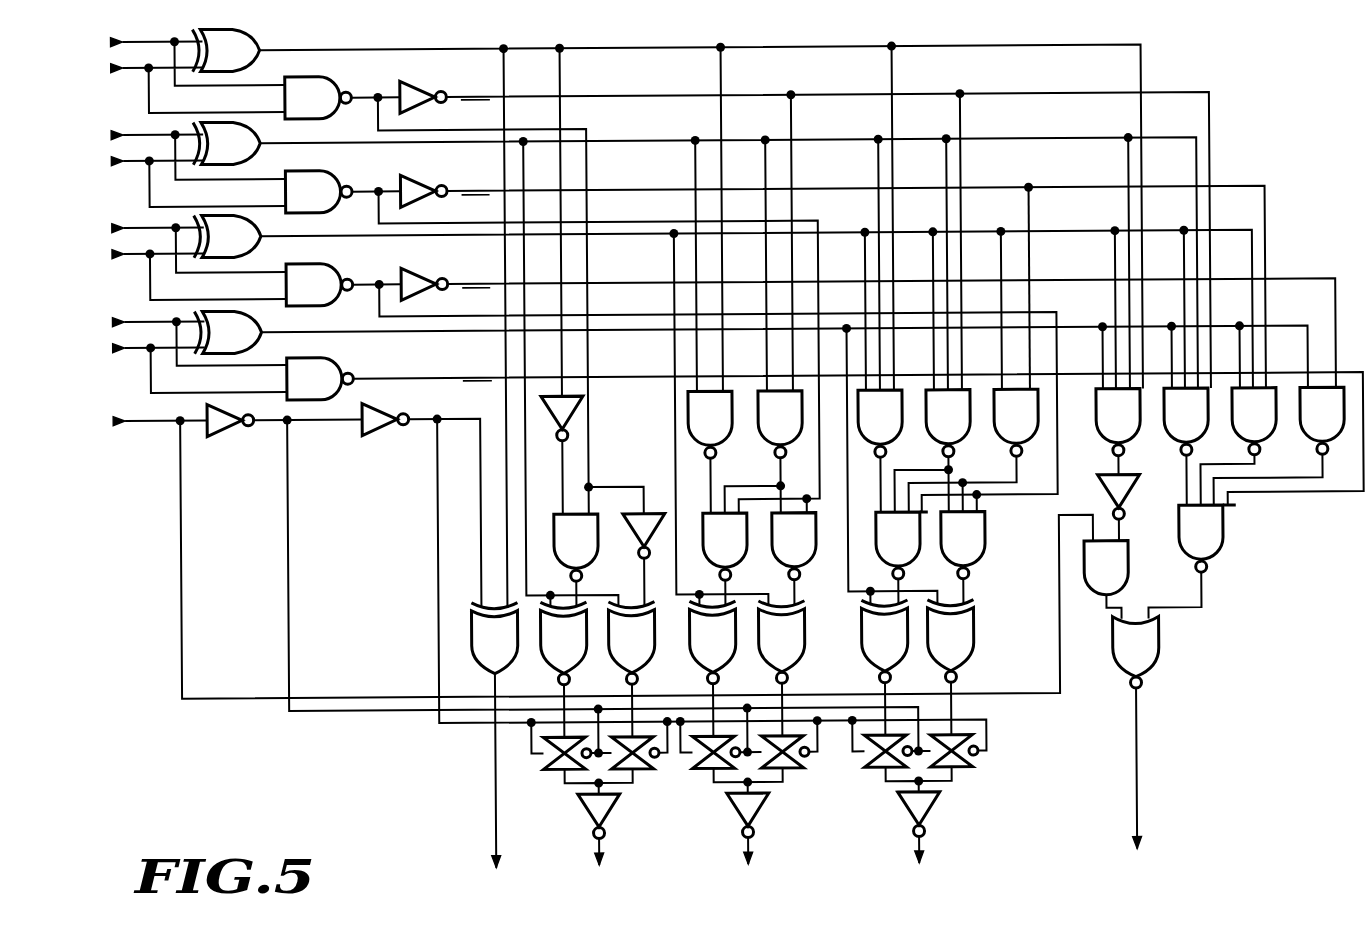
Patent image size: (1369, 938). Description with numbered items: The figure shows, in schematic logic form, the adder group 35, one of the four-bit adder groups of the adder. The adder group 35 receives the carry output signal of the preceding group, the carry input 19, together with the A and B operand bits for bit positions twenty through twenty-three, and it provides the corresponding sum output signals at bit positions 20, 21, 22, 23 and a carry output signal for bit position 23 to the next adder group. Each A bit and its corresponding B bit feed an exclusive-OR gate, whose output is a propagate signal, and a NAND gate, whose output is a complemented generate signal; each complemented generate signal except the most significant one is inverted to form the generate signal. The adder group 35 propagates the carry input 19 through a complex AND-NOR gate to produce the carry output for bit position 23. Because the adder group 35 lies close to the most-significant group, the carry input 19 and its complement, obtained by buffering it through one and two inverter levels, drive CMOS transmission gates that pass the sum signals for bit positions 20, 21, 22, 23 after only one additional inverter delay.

The adder group 35 is at (254, 808).
The bit slice 20 (inputs A20, B20; sum output S20) 20 is at (291, 465).
The bit slice 21 (inputs A21, B21; sum output S21) 21 is at (342, 511).
The bit slice 22 (inputs A22, B22; sum output S22) 22 is at (417, 557).
The bit slice 23 (inputs A23, B23; sum output S23; carry out COUT23) 23 is at (1176, 859).
The carry input COUT19 and its inverters 19 is at (261, 507).